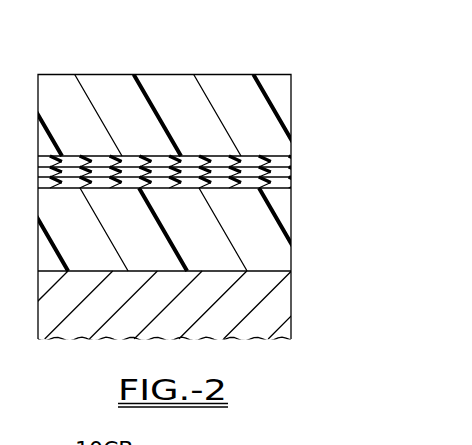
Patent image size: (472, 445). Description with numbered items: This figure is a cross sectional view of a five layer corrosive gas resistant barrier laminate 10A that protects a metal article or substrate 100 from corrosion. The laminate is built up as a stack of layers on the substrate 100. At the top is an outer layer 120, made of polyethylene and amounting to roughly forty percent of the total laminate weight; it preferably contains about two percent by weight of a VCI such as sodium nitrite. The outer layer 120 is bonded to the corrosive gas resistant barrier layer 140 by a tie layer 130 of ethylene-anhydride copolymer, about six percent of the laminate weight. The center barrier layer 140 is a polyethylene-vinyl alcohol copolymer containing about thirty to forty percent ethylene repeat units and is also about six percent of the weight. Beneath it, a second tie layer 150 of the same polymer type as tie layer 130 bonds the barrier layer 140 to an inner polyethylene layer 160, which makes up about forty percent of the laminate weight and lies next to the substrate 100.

The corrosive gas resistant barrier laminate 10A is at (145, 73).
The top outer layer 120 is at (292, 121).
The tie layer 130 is at (292, 159).
The corrosive gas resistant barrier layer 140 is at (292, 174).
The second tie layer 150 is at (292, 182).
The inner layer 160 is at (292, 233).
The metal article or substrate 100 is at (292, 305).